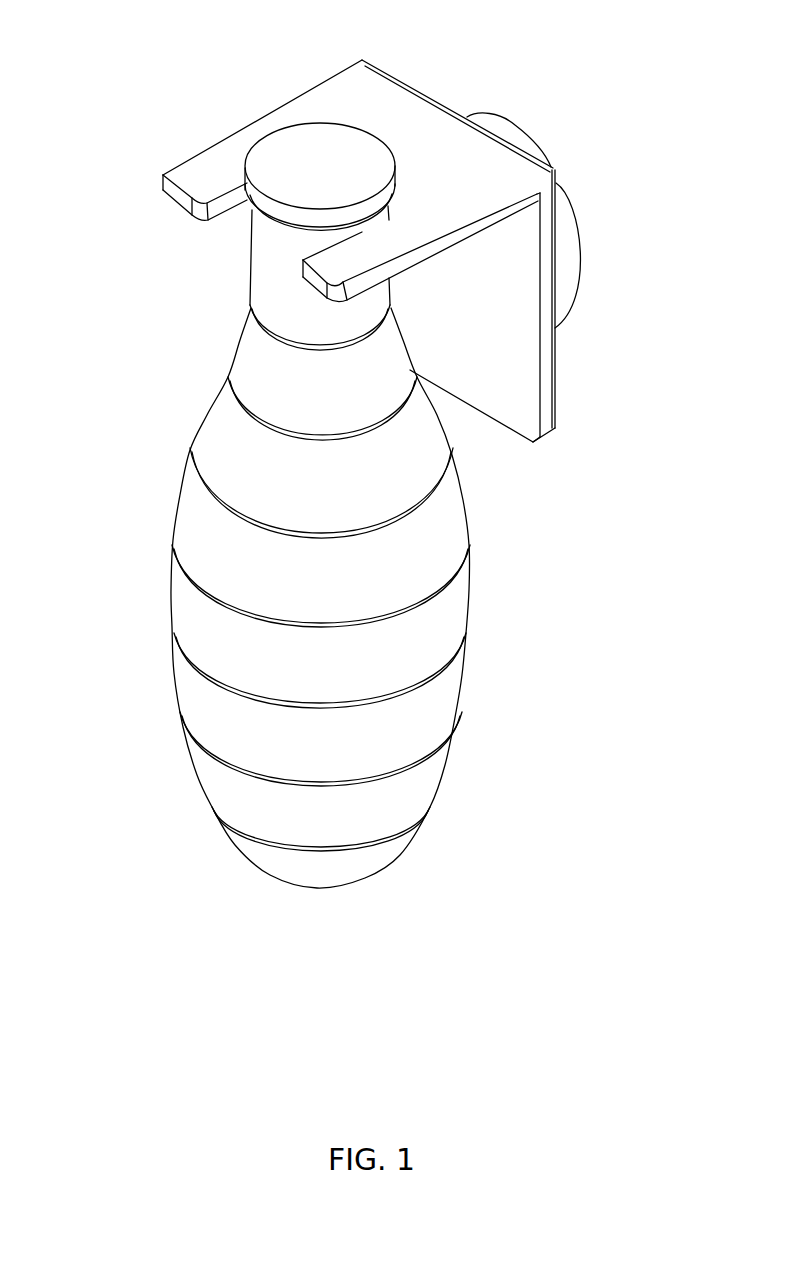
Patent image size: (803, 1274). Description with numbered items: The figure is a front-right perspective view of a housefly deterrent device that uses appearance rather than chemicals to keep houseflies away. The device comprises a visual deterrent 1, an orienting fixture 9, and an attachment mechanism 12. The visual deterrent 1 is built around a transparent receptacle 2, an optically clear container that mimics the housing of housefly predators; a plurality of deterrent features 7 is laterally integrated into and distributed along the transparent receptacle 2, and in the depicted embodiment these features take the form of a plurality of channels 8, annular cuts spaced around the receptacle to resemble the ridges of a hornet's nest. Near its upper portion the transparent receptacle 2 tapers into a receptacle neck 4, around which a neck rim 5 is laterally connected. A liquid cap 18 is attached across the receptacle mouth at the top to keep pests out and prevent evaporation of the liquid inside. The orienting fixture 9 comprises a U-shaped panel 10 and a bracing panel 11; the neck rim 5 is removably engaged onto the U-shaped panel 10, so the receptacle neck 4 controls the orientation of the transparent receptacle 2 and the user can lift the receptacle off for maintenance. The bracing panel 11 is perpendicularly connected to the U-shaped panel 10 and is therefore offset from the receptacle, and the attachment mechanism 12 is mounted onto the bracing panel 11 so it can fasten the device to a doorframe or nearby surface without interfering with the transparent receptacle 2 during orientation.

The visual deterrent 1 is at (163, 932).
The transparent receptacle 2 is at (323, 677).
The receptacle neck 4 is at (262, 285).
The neck rim 5 is at (263, 223).
The plurality of deterrent features 7 is at (137, 535).
The plurality of channels 8 is at (192, 480).
The orienting fixture 9 is at (307, 39).
The U-shaped panel 10 is at (195, 175).
The bracing panel 11 is at (548, 383).
The attachment mechanism 12 is at (612, 246).
The liquid cap 18 is at (338, 181).